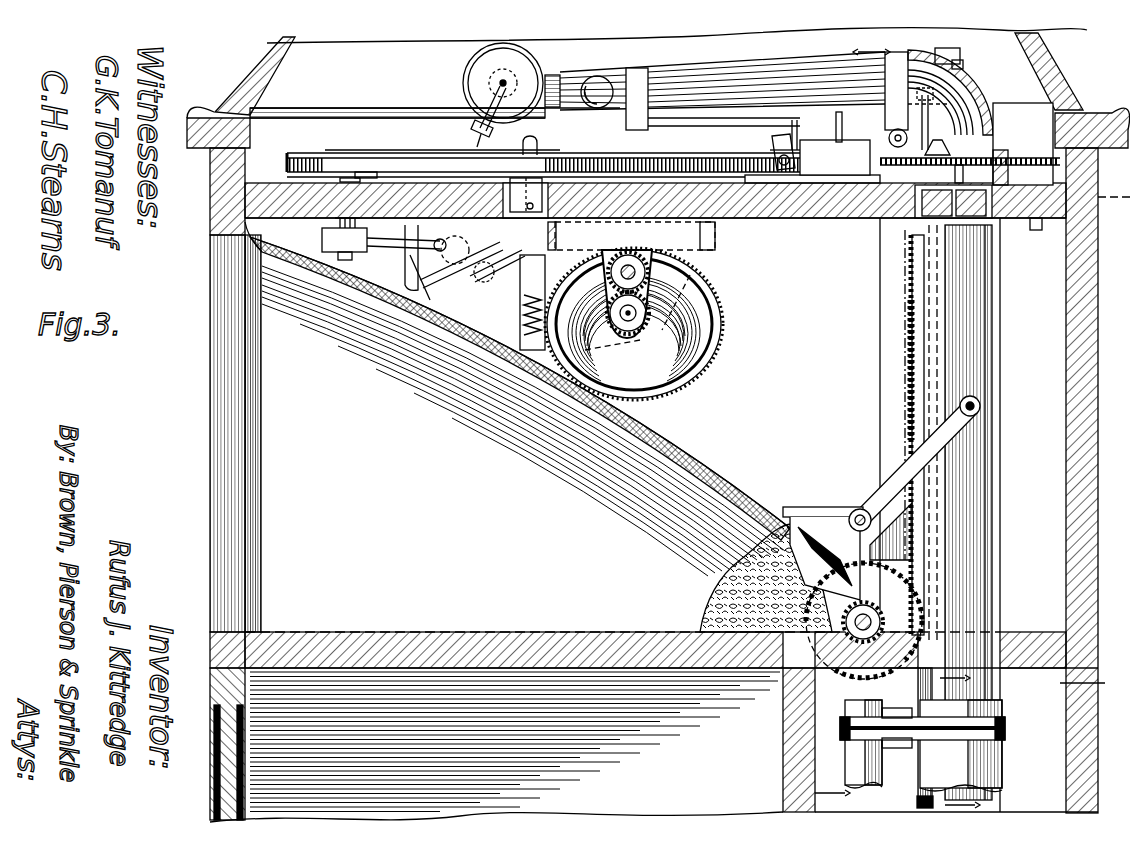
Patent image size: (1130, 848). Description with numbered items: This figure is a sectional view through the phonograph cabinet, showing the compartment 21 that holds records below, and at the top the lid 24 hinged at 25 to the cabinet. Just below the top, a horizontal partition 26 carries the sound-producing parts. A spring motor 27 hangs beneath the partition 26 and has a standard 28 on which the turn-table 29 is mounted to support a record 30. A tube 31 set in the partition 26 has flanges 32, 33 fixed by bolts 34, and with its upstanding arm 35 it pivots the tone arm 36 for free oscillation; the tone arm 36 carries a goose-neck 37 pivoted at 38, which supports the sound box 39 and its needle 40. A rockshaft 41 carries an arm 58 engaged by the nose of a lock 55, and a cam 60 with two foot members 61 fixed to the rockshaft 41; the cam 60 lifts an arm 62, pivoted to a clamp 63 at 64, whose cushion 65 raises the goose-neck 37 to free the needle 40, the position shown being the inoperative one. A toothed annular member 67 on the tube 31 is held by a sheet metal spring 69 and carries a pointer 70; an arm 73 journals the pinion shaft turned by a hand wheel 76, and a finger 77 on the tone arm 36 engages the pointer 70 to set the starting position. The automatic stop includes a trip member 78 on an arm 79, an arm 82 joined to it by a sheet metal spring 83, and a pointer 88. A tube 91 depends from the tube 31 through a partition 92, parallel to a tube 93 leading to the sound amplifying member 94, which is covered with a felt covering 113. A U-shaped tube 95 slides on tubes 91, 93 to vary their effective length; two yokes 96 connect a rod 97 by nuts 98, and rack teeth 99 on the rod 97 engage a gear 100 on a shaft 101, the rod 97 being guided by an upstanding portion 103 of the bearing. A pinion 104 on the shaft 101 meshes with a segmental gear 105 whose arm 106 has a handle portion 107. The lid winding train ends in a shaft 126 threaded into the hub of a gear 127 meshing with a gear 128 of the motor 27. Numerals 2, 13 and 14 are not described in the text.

The frame member 2 is at (1090, 681).
The section line 13 is at (852, 422).
The section line 14 is at (960, 740).
The compartment 21 is at (654, 747).
The lid 24 is at (1045, 80).
The hinge 25 is at (1100, 118).
The horizontal partition 26 is at (822, 208).
The spring motor 27 is at (690, 300).
The standard 28 is at (560, 154).
The turn-table 29 is at (380, 168).
The record 30 is at (618, 120).
The tube 31 is at (962, 218).
The flange 32 is at (1010, 183).
The flange 33 is at (1038, 230).
The bolts 34 is at (870, 232).
The upstanding arm 35 is at (990, 88).
The tone arm 36 is at (672, 78).
The goose-neck 37 is at (560, 74).
The pivot 38 is at (600, 80).
The sound box 39 is at (480, 62).
The needle 40 is at (480, 134).
The rockshaft 41 is at (787, 183).
The lock 55 is at (748, 183).
The arm 58 is at (808, 178).
The cam 60 is at (775, 148).
The foot members 61 is at (768, 150).
The arm 62 is at (680, 118).
The clamp 63 is at (890, 70).
The pivot 64 is at (925, 138).
The cushion 65 is at (533, 164).
The annular member 67 is at (1003, 165).
The sheet metal spring 69 is at (1010, 178).
The pointer 70 is at (929, 87).
The arm 73 is at (937, 145).
The hand wheel 76 is at (971, 203).
The finger 77 is at (937, 203).
The trip member 78 is at (838, 140).
The arm 79 is at (796, 118).
The arm 82 is at (848, 178).
The sheet metal spring 83 is at (835, 157).
The pointer 88 is at (895, 149).
The tube 91 is at (990, 356).
The partition 92 is at (1028, 645).
The tube 93 is at (860, 690).
The sound amplifying member 94 is at (722, 482).
The U-shaped tube 95 is at (865, 755).
The yokes 96 is at (1006, 724).
The rod 97 is at (913, 240).
The nuts 98 is at (985, 712).
The rack teeth 99 is at (912, 387).
The gear 100 is at (890, 596).
The shaft 101 is at (852, 622).
The upstanding portion 103 is at (908, 370).
The pinion 104 is at (840, 680).
The segmental gear 105 is at (800, 510).
The arm 106 is at (900, 472).
The handle portion 107 is at (985, 410).
The covering 113 is at (672, 448).
The shaft 126 is at (626, 262).
The gear 127 is at (635, 280).
The gear 128 is at (655, 330).